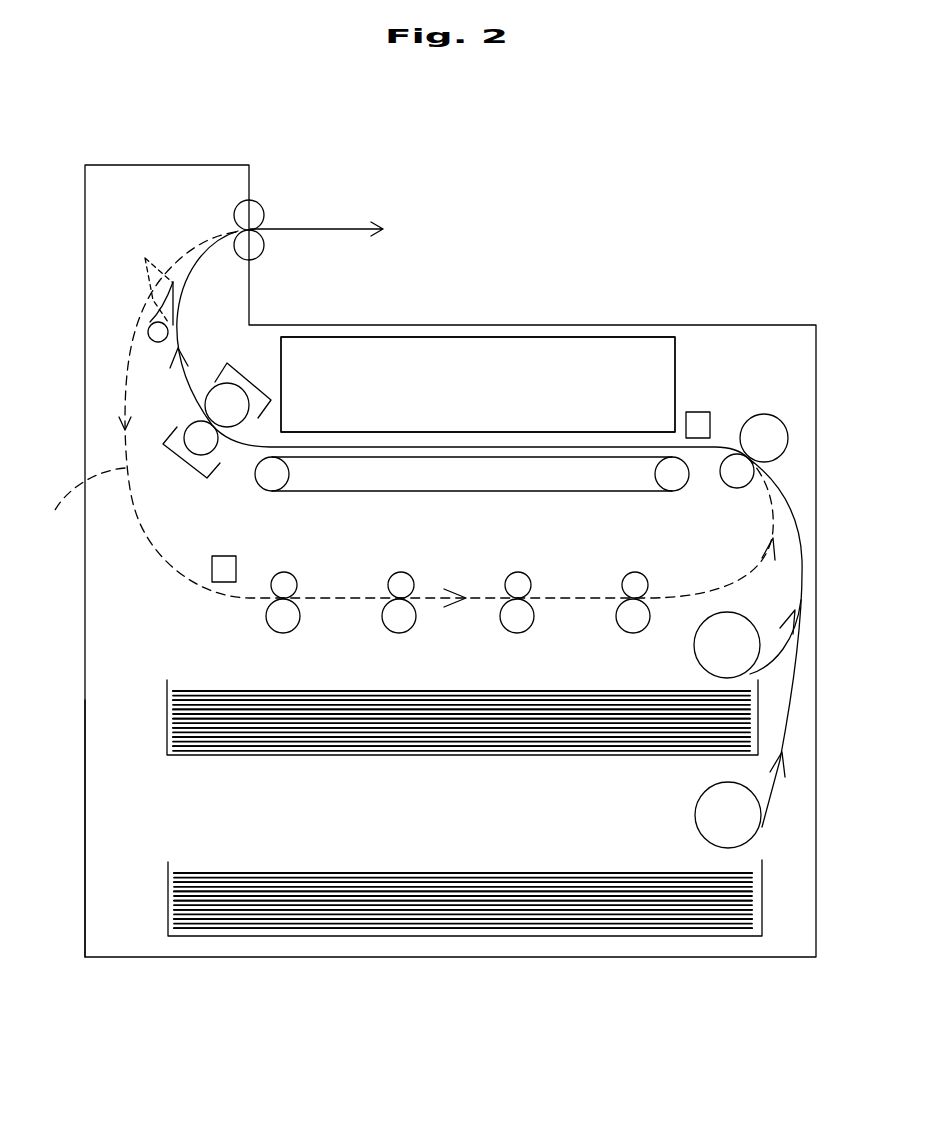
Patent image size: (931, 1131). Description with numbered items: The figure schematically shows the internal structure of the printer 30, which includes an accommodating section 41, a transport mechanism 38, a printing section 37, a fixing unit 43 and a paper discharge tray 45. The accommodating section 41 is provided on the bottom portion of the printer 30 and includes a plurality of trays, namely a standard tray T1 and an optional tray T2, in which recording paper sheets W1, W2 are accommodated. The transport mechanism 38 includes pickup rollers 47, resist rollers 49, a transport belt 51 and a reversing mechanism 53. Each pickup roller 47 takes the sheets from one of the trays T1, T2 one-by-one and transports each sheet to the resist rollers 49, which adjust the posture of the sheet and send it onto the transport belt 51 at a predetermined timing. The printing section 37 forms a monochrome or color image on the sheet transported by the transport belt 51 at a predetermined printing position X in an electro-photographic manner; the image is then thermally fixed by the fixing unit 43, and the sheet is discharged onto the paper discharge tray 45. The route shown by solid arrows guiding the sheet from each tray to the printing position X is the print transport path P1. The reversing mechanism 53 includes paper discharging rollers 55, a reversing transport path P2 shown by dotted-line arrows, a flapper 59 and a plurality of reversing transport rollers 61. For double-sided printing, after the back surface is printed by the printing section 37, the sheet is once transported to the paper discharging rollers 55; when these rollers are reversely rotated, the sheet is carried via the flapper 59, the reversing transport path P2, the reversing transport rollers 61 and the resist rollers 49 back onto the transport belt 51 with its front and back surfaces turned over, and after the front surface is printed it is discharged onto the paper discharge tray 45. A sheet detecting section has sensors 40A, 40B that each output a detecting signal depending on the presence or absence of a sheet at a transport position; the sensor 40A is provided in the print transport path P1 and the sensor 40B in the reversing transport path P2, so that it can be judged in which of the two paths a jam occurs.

The printer 30 is at (476, 190).
The printing section 37 is at (589, 347).
The transport mechanism 38 is at (177, 601).
The sensor 40A is at (698, 412).
The sensor 40B is at (223, 568).
The accommodating section 41 is at (87, 851).
The fixing unit 43 is at (197, 478).
The paper discharge tray 45 is at (492, 325).
The pickup rollers 47 is at (708, 652).
The resist rollers 49 is at (732, 465).
The transport belt 51 is at (560, 492).
The reversing mechanism 53 is at (123, 535).
The paper discharging rollers 55 is at (258, 258).
The flapper 59 is at (167, 282).
The reversing transport rollers 61 is at (284, 578).
The printing position X is at (499, 430).
The print transport path P1 is at (560, 447).
The reversing transport path P2 is at (404, 419).
The standard tray T1 is at (167, 720).
The optional tray T2 is at (168, 902).
The recording paper sheets W1 is at (353, 703).
The recording paper sheets W2 is at (352, 880).